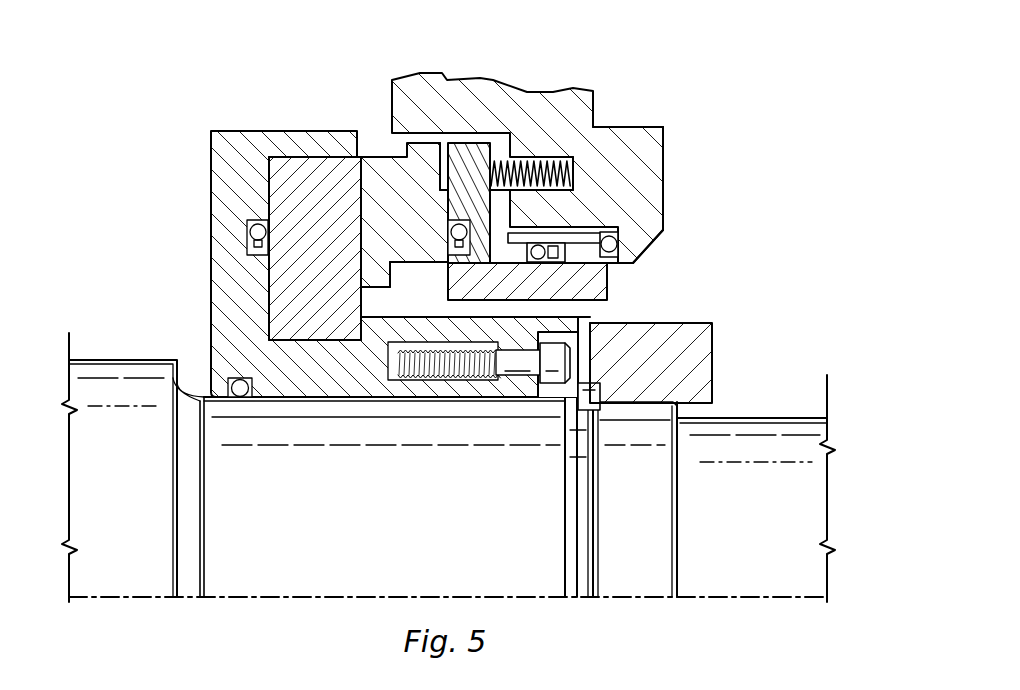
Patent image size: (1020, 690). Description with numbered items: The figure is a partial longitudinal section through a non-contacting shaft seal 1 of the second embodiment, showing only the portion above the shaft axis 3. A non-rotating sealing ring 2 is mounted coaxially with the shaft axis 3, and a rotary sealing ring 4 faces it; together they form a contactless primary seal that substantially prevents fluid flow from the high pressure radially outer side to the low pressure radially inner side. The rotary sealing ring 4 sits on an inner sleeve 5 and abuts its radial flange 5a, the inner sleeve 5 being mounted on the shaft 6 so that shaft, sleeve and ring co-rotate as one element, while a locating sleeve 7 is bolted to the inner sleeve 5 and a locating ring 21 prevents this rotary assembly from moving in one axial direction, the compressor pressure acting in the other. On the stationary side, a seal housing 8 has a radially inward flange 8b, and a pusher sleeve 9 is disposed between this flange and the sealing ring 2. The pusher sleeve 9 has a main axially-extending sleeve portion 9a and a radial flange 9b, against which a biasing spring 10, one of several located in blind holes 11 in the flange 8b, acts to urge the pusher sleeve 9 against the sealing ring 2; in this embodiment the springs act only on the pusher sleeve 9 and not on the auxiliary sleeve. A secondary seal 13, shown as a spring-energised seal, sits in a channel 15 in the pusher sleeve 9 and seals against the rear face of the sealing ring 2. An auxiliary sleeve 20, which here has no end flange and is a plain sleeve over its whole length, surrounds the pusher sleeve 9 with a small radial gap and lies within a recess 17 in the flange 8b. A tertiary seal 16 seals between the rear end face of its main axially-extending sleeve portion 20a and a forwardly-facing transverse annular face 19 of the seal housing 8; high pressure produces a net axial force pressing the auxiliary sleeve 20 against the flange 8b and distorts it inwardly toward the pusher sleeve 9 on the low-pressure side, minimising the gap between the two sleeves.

The shaft seal 1 is at (760, 183).
The sealing ring 2 is at (373, 152).
The shaft axis 3 is at (365, 597).
The rotary sealing ring 4 is at (300, 165).
The inner sleeve 5 is at (211, 197).
The radial flange 5a is at (224, 296).
The shaft 6 is at (120, 360).
The locating sleeve 7 is at (385, 300).
The seal housing 8 is at (421, 84).
The radially inward flange 8b is at (656, 176).
The pusher sleeve 9 is at (440, 163).
The main axially-extending sleeve portion 9a is at (597, 300).
The radial flange 9b is at (457, 150).
The biasing spring 10 is at (537, 160).
The blind hole 11 is at (558, 155).
The secondary seal 13 is at (455, 232).
The channel 15 is at (450, 266).
The tertiary seal 16 is at (612, 243).
The recess 17 is at (632, 190).
The transverse annular face 19 is at (645, 205).
The auxiliary sleeve 20 is at (597, 235).
The main axially-extending sleeve portion 20a is at (603, 276).
The locating ring 21 is at (714, 331).